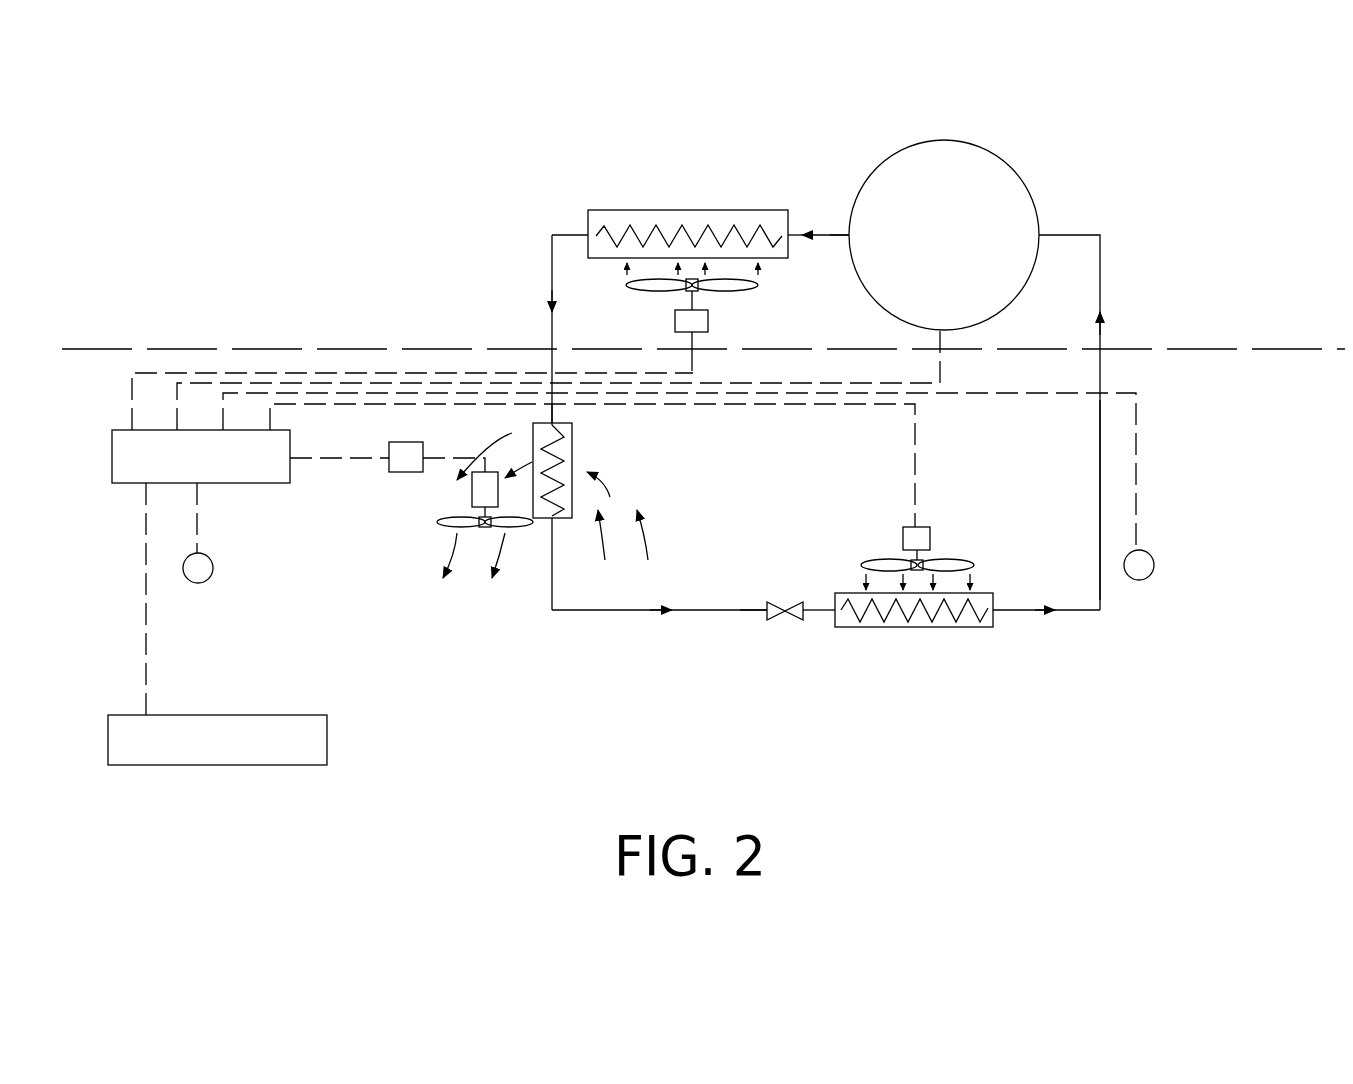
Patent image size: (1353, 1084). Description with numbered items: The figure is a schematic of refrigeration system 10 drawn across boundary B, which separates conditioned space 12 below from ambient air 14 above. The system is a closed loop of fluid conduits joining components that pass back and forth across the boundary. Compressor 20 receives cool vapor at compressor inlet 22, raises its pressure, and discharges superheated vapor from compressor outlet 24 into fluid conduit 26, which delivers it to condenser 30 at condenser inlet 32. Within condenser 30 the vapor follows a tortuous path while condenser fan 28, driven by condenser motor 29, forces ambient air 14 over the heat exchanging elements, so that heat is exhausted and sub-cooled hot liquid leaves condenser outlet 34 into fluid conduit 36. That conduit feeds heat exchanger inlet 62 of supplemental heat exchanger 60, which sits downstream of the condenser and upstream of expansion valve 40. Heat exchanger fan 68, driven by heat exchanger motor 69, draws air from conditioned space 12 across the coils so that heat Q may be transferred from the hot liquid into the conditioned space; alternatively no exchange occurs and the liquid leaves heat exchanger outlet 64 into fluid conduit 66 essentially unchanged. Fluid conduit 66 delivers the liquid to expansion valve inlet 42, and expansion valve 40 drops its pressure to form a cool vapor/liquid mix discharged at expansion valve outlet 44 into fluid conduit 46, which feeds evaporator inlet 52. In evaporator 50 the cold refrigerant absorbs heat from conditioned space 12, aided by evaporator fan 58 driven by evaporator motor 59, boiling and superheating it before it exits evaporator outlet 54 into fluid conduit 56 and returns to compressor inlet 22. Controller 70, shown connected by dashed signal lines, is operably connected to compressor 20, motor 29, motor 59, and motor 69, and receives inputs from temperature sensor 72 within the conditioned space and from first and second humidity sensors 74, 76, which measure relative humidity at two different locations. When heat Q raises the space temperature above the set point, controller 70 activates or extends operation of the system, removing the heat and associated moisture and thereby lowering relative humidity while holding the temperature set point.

The refrigeration system 10 is at (262, 262).
The conditioned space 12 is at (1232, 500).
The ambient air 14 is at (1170, 273).
The boundary B is at (1215, 349).
The compressor 20 is at (1000, 170).
The compressor inlet 22 is at (1040, 232).
The compressor outlet 24 is at (848, 240).
The fluid conduit 26 is at (833, 233).
The condenser fan 28 is at (655, 290).
The condenser motor 29 is at (710, 321).
The condenser 30 is at (708, 212).
The condenser inlet 32 is at (794, 243).
The condenser outlet 34 is at (588, 235).
The fluid conduit 36 is at (550, 258).
The expansion valve 40 is at (780, 618).
The expansion valve inlet 42 is at (767, 611).
The expansion valve outlet 44 is at (805, 604).
The fluid conduit 46 is at (812, 607).
The evaporator 50 is at (940, 625).
The evaporator inlet 52 is at (835, 616).
The evaporator outlet 54 is at (994, 612).
The fluid conduit 56 is at (1100, 483).
The evaporator fan 58 is at (949, 564).
The evaporator motor 59 is at (903, 538).
The supplemental heat exchanger 60 is at (572, 452).
The heat exchanger inlet 62 is at (553, 423).
The heat exchanger outlet 64 is at (552, 520).
The fluid conduit 66 is at (625, 614).
The heat exchanger fan 68 is at (437, 519).
The heat exchanger motor 69 is at (472, 492).
The controller 70 is at (130, 483).
The temperature sensor 72 is at (208, 765).
The first humidity sensor 74 is at (212, 560).
The second humidity sensor 76 is at (1152, 560).
The heat Q is at (462, 592).